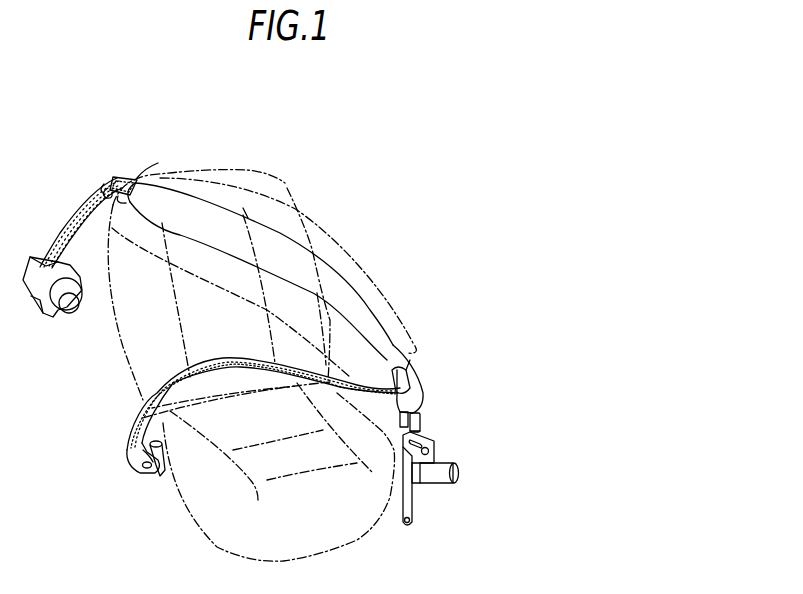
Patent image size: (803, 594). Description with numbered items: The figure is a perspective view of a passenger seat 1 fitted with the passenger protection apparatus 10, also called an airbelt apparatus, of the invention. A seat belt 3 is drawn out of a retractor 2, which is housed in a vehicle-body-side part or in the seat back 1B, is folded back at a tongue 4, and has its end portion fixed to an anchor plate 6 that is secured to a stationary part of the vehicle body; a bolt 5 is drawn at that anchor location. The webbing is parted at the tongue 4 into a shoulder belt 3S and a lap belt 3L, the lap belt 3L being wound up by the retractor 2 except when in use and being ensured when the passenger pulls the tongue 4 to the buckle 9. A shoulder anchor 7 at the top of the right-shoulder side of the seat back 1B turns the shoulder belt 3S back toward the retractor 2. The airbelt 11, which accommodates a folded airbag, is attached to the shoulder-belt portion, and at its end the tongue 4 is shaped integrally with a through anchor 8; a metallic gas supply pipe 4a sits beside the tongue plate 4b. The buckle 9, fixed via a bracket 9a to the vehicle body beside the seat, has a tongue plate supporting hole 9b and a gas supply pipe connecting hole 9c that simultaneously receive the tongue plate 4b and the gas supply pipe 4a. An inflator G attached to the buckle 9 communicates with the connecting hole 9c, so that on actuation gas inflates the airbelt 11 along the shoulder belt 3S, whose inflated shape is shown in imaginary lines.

The passenger seat 1 is at (100, 410).
The seat back 1B is at (287, 182).
The retractor 2 is at (60, 314).
The seat belt 3 is at (77, 203).
The shoulder belt 3S is at (140, 185).
The lap belt 3L is at (390, 368).
The tongue 4 is at (427, 405).
The gas supply pipe 4a is at (422, 430).
The tongue plate 4b is at (422, 423).
The bolt 5 is at (158, 480).
The anchor plate 6 is at (132, 475).
The shoulder anchor 7 is at (137, 175).
The through anchor 8 is at (425, 400).
The buckle 9 is at (463, 461).
The bracket 9a is at (415, 498).
The tongue plate supporting hole 9b is at (427, 442).
The gas supply pipe connecting hole 9c is at (433, 452).
The passenger protection apparatus 10 is at (395, 233).
The airbelt 11 is at (330, 237).
The inflator G is at (465, 479).